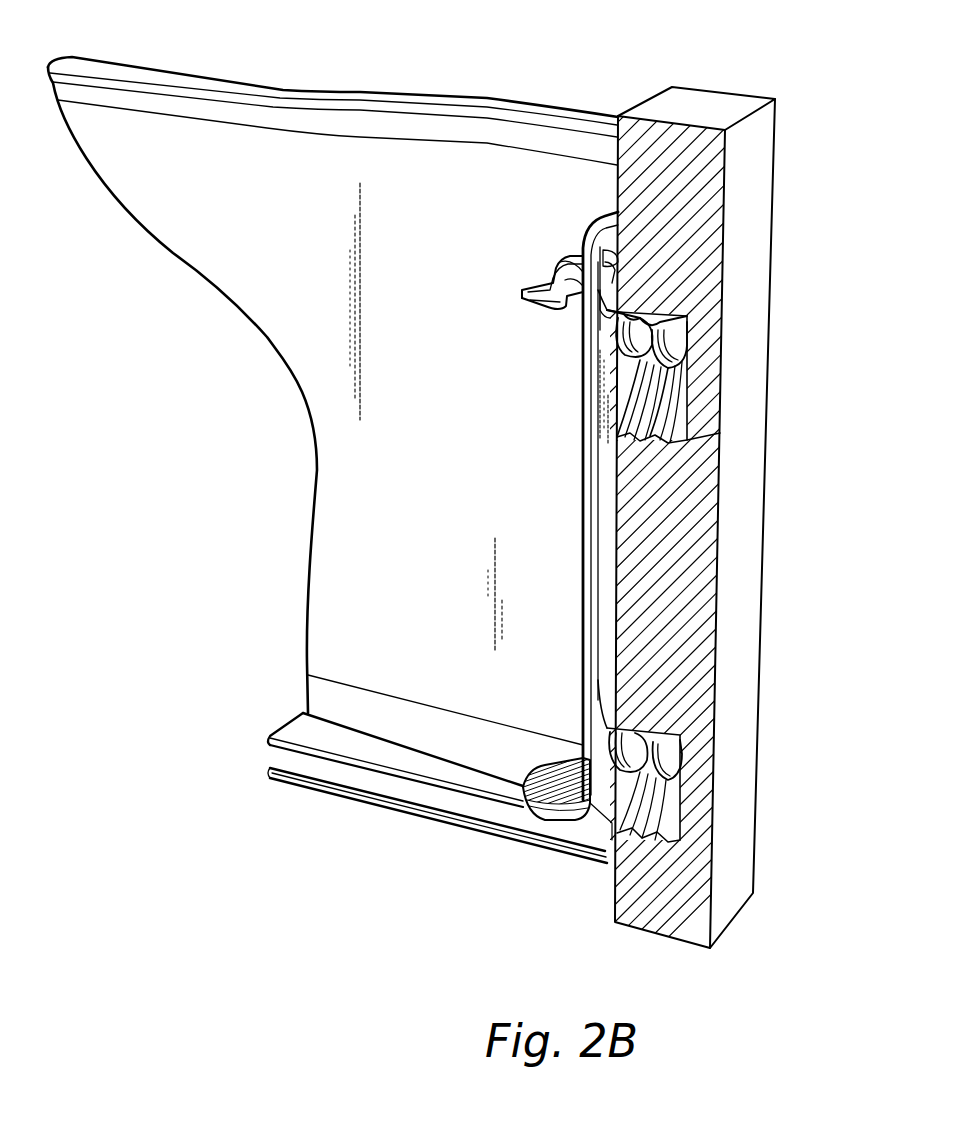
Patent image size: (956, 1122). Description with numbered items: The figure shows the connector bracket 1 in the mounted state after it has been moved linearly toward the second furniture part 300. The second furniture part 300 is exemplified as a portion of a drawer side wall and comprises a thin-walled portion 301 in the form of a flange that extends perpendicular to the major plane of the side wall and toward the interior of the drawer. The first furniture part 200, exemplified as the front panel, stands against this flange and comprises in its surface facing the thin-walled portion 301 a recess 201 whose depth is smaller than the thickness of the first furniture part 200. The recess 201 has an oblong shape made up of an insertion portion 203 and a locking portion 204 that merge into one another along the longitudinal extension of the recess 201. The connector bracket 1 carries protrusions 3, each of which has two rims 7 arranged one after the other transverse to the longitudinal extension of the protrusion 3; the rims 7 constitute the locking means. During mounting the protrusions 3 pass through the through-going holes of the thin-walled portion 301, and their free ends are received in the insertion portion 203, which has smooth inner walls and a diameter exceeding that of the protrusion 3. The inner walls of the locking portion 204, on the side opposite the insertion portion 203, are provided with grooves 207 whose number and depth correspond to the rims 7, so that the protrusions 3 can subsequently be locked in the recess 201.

The second furniture part 300 is at (393, 93).
The first furniture part 200 is at (715, 100).
The recess 201 is at (686, 312).
The connector bracket 1 is at (579, 551).
The thin-walled portion 301 is at (606, 215).
The protrusion 3 is at (640, 317).
The insertion portion 203 is at (683, 338).
The rim 7 is at (640, 368).
The locking portion 204 is at (660, 440).
The groove 207 is at (637, 450).